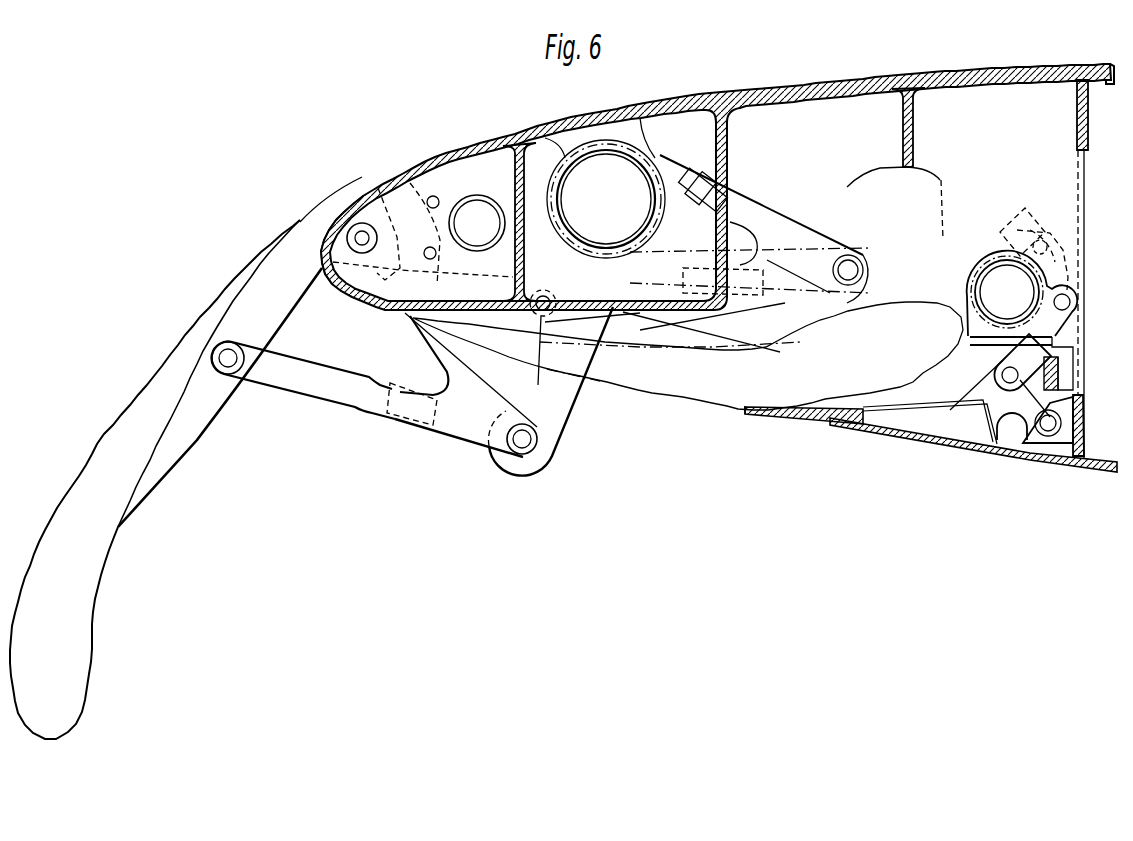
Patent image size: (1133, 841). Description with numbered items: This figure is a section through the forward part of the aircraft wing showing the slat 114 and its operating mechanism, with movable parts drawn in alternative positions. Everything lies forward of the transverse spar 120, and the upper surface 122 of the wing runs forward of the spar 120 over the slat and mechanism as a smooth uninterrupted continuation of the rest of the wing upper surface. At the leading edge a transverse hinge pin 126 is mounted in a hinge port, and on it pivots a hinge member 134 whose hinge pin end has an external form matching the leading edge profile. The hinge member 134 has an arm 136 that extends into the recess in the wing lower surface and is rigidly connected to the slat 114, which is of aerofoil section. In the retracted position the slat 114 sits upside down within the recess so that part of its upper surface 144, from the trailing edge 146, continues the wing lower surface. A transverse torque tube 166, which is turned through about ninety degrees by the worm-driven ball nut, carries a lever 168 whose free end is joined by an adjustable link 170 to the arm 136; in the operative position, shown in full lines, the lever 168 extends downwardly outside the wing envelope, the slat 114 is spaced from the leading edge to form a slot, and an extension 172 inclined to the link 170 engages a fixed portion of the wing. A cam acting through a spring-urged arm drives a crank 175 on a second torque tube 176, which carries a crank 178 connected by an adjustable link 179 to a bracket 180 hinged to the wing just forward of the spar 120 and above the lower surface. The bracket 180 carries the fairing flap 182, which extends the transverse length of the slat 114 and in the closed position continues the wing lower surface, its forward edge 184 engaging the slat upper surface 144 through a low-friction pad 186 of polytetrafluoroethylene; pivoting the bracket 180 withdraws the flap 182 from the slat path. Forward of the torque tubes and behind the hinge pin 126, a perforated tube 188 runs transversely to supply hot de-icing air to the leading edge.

The slat 114 is at (118, 428).
The transverse spar 120 is at (1083, 174).
The upper surface of the wing 122 is at (740, 87).
The hinge pin 126 is at (361, 236).
The hinge member 134 is at (298, 220).
The arm 136 is at (192, 425).
The upper surface of the slat 144 is at (187, 331).
The trailing edge 146 is at (293, 223).
The torque tube 166 is at (615, 142).
The lever 168 is at (560, 420).
The adjustable link 170 is at (350, 396).
The extension 172 is at (446, 350).
The crank 175 is at (1005, 238).
The torque tube 176 is at (990, 266).
The crank 178 is at (1058, 262).
The adjustable link 179 is at (1000, 353).
The bracket 180 is at (1024, 410).
The fairing flap 182 is at (898, 437).
The forward edge 184 is at (745, 408).
The pad 186 is at (826, 425).
The tube 188 is at (473, 196).